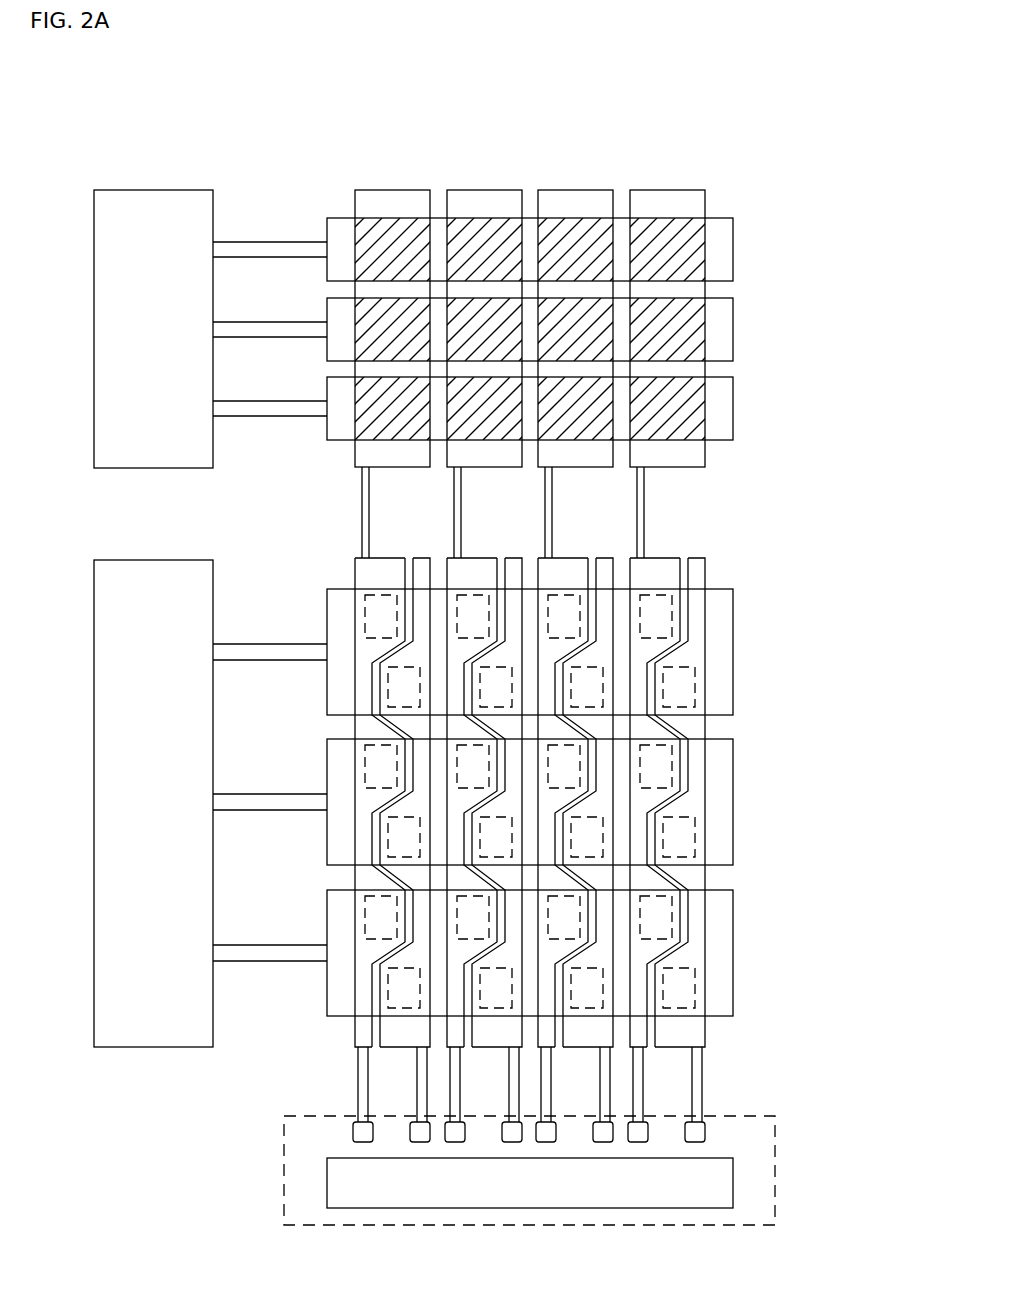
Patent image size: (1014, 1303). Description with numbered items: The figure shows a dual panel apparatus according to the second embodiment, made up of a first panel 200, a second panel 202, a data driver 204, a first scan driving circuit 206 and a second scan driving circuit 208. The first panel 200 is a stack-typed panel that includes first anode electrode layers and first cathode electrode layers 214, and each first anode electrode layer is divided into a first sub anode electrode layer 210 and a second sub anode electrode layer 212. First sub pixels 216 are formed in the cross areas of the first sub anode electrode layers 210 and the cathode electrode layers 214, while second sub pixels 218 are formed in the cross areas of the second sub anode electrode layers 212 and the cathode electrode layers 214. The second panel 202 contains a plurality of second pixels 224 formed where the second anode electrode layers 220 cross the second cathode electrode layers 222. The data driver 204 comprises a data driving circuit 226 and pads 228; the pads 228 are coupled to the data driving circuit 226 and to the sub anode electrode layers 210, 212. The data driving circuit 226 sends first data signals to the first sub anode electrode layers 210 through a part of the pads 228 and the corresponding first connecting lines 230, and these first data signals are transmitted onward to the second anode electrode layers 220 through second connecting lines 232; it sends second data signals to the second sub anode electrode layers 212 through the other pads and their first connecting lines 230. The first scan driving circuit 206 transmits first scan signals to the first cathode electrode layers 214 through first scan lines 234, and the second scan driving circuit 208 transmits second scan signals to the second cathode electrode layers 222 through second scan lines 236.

The first panel 200 is at (601, 757).
The second panel 202 is at (572, 291).
The data driver 204 is at (593, 1123).
The first scan driving circuit 206 is at (150, 1048).
The second scan driving circuit 208 is at (152, 190).
The first sub anode electrode layer 210 is at (653, 558).
The second sub anode electrode layer 212 is at (702, 556).
The first cathode electrode layers 214 is at (750, 598).
The first sub pixels 216 is at (679, 606).
The second sub pixels 218 is at (689, 681).
The second anode electrode layers 220 is at (367, 168).
The second cathode electrode layers 222 is at (582, 347).
The second pixels 224 is at (750, 225).
The data driving circuit 226 is at (733, 1178).
The pads 228 is at (705, 1130).
The first connecting lines 230 is at (698, 1065).
The second connecting lines 232 is at (362, 487).
The first scan lines 234 is at (268, 653).
The second scan lines 236 is at (262, 240).